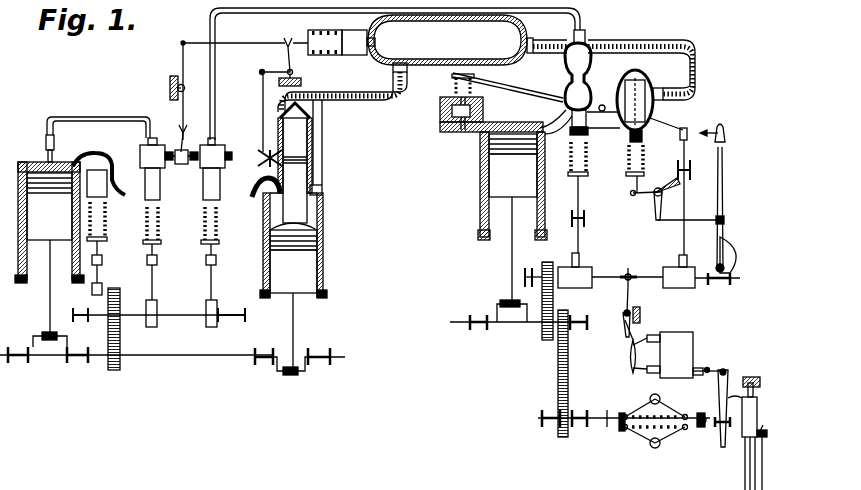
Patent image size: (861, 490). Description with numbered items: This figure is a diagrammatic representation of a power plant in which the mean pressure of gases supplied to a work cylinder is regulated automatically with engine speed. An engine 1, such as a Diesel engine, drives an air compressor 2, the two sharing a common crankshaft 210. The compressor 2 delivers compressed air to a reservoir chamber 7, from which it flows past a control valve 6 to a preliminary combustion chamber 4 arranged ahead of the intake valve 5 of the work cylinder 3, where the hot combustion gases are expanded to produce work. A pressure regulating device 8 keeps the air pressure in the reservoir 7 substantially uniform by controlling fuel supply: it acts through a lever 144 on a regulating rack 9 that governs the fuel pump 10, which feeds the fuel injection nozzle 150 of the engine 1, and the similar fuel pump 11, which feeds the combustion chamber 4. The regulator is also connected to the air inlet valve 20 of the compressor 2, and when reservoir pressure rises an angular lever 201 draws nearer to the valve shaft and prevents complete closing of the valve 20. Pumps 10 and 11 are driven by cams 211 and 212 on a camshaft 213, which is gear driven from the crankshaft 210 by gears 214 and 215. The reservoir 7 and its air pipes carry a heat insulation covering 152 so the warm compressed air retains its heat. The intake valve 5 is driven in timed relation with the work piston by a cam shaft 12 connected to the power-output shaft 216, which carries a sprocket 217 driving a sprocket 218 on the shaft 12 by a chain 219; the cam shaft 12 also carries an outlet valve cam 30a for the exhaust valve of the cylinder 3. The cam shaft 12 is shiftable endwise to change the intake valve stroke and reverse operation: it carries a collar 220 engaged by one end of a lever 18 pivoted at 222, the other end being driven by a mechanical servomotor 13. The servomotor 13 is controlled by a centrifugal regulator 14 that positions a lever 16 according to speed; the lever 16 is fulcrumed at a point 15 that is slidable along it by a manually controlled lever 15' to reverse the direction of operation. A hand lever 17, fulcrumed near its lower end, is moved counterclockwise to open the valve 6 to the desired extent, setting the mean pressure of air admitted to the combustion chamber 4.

The engine 1 is at (70, 250).
The air compressor 2 is at (293, 237).
The work cylinder 3 is at (493, 198).
The combustion chamber 4 is at (596, 53).
The intake valve 5 is at (587, 118).
The control valve 6 is at (640, 107).
The reservoir chamber 7 is at (447, 40).
The pressure regulating device 8 is at (352, 52).
The regulating rack 9 is at (177, 165).
The fuel pump 10 is at (152, 160).
The fuel pump 11 is at (215, 157).
The cam shaft 12 is at (605, 273).
The mechanical servomotor 13 is at (664, 349).
The centrifugal regulator 14 is at (650, 425).
The fulcrum 15 is at (724, 433).
The manually controlled lever 15' is at (657, 482).
The lever 16 is at (720, 432).
The manually controlled lever 17 is at (722, 182).
The lever 18 is at (633, 300).
The air inlet valve 20 is at (270, 206).
The outlet valve cam 30a is at (697, 288).
The lever 144 is at (180, 62).
The fuel injection nozzle 150 is at (46, 151).
The heat insulation covering 152 is at (430, 66).
The angular lever 201 is at (260, 162).
The crankshaft 210 is at (195, 358).
The cam 211 is at (150, 327).
The fuel pump cam 212 is at (212, 327).
The camshaft 213 is at (206, 290).
The gear 214 is at (110, 372).
The gear 215 is at (128, 278).
The power-output shaft 216 is at (500, 304).
The sprocket 217 is at (542, 332).
The sprocket 218 is at (550, 262).
The chain 219 is at (553, 295).
The collar 220 is at (652, 268).
The pivot 222 is at (622, 317).